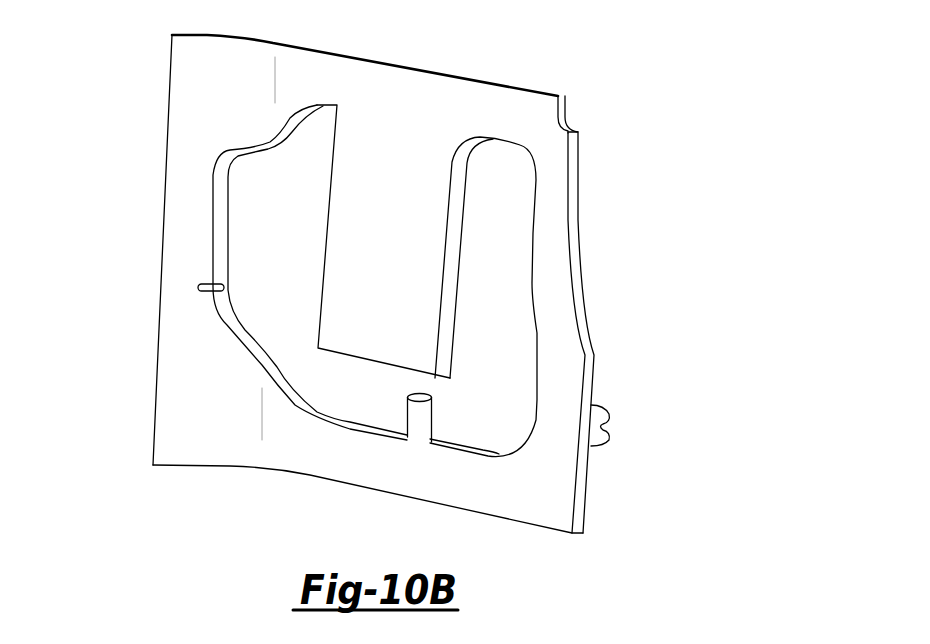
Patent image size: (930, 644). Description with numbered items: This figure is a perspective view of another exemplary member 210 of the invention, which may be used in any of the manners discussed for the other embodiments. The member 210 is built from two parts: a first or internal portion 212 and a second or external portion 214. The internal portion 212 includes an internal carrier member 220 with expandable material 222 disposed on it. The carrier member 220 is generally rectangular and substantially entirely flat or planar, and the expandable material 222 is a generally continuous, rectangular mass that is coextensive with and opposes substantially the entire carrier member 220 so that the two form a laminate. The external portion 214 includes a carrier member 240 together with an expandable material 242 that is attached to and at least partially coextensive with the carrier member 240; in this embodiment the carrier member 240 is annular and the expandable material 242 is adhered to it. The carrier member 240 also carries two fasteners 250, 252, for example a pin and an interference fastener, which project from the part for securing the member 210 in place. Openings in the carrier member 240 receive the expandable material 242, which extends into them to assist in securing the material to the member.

The member 210 is at (625, 88).
The internal portion 212 is at (500, 307).
The external portion 214 is at (524, 535).
The internal carrier member 220 is at (457, 242).
The expandable material 222 is at (398, 275).
The carrier member 240 is at (275, 355).
The expandable material 242 is at (183, 420).
The fastener 250 is at (415, 417).
The fastener 252 is at (644, 425).